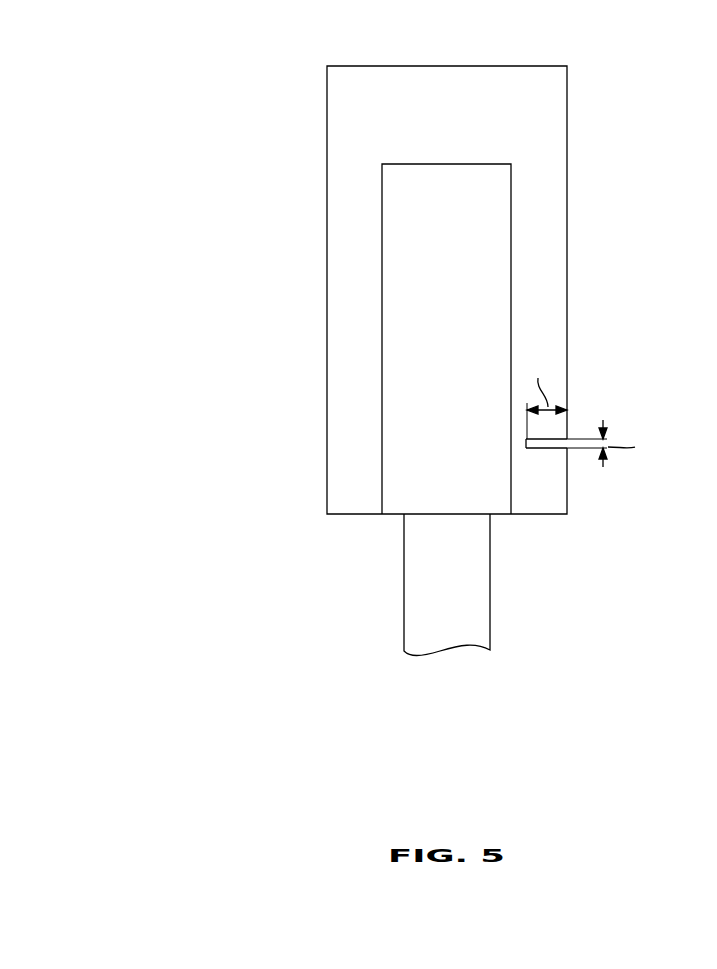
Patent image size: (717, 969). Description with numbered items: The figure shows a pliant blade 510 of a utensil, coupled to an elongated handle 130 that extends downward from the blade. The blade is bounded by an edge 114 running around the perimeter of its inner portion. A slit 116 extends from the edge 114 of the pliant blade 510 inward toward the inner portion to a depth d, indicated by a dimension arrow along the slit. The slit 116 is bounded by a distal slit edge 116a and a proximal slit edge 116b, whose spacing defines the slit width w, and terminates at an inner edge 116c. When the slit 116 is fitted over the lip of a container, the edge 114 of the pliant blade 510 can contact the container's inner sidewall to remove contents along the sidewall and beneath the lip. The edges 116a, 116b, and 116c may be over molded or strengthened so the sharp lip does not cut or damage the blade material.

The pliant blade 510 is at (292, 144).
The edge 114 is at (327, 418).
The elongated handle 130 is at (516, 634).
The slit 116 is at (562, 449).
The distal slit edge 116a is at (553, 438).
The proximal slit edge 116b is at (534, 449).
The inner edge 116c is at (526, 443).